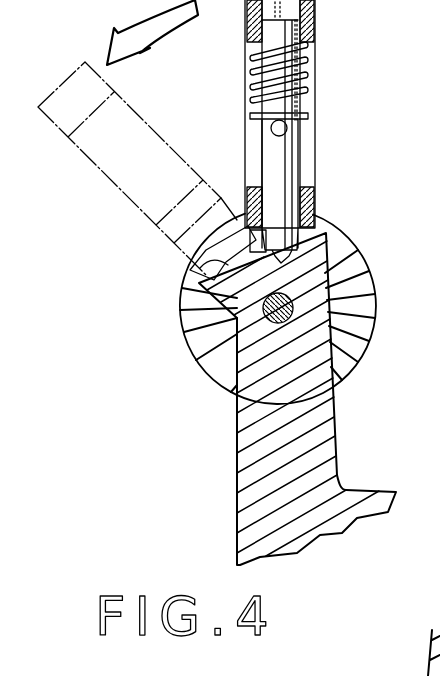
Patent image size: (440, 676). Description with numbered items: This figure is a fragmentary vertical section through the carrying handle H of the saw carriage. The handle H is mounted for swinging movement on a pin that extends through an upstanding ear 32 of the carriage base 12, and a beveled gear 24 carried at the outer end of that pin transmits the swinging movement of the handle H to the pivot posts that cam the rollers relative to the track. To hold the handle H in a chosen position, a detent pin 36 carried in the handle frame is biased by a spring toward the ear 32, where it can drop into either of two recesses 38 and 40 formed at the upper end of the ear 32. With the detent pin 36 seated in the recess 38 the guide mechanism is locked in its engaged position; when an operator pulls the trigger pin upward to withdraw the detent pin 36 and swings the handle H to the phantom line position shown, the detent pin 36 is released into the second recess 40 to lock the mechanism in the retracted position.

The handle H is at (317, 27).
The detent pin 36 is at (300, 147).
The recess 38 is at (330, 262).
The recess 40 is at (205, 258).
The beveled gear 24 is at (211, 347).
The ear 32 is at (307, 413).
The carriage base 12 is at (320, 522).